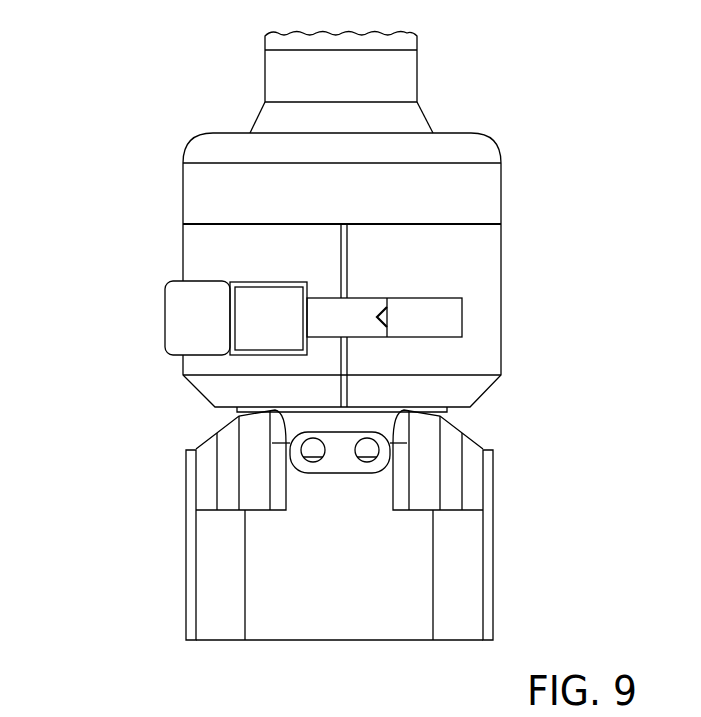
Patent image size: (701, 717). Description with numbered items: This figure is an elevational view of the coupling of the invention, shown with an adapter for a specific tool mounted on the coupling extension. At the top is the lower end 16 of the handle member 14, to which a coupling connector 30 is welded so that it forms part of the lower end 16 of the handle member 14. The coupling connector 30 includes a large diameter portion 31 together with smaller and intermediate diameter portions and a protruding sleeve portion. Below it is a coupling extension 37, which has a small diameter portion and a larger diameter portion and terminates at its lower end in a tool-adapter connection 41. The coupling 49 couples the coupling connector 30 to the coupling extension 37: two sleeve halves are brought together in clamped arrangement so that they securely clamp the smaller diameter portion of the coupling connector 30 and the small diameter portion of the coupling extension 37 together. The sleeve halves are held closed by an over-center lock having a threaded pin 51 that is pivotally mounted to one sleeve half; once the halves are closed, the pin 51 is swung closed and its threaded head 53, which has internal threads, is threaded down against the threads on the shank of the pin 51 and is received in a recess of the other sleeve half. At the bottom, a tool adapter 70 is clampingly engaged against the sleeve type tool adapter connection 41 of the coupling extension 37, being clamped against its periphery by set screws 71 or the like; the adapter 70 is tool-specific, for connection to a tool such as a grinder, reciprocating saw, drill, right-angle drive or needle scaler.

The handle member 14 is at (263, 40).
The lower end of the handle member 16 is at (398, 83).
The coupling connector 30 is at (503, 212).
The large diameter portion 31 is at (480, 183).
The coupling 49 is at (482, 273).
The threaded pin 51 is at (432, 323).
The threaded head 53 is at (195, 317).
The coupling extension 37 is at (315, 420).
The tool-adapter connection 41 is at (388, 430).
The set screws 71 is at (317, 462).
The tool adapter 70 is at (495, 541).